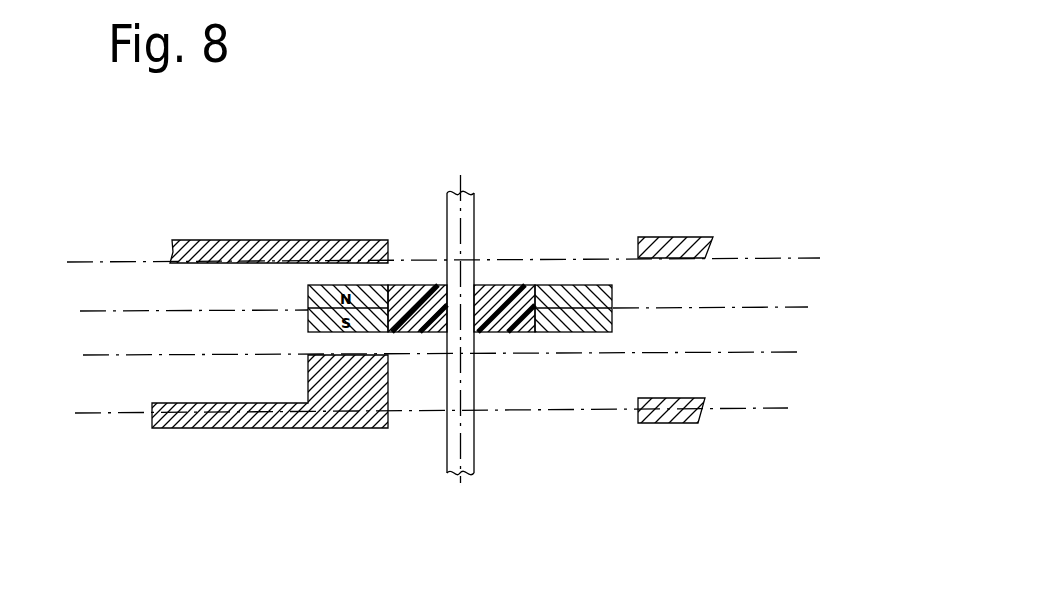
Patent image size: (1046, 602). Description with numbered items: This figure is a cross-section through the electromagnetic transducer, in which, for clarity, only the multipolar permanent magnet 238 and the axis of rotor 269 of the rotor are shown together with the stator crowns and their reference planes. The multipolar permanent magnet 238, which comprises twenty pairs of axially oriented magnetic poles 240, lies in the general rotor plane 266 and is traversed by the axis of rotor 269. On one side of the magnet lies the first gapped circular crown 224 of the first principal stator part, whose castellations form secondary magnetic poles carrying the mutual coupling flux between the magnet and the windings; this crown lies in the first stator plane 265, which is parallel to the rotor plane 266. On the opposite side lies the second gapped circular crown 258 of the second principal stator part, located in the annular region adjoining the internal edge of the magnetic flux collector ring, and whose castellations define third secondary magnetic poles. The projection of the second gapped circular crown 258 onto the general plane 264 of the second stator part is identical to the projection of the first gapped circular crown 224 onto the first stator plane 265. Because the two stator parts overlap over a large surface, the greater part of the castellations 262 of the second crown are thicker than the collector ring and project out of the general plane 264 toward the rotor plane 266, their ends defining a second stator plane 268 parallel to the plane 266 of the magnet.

The first gapped circular crown 224 is at (345, 222).
The multipolar permanent magnet 238 is at (565, 332).
The axially oriented magnetic poles 240 is at (560, 285).
The second gapped circular crown 258 is at (352, 440).
The castellations 262 is at (332, 393).
The general plane 264 is at (133, 422).
The first stator plane 265 is at (140, 248).
The general rotor plane 266 is at (86, 306).
The second stator plane 268 is at (96, 364).
The axis of rotor 269 is at (462, 232).